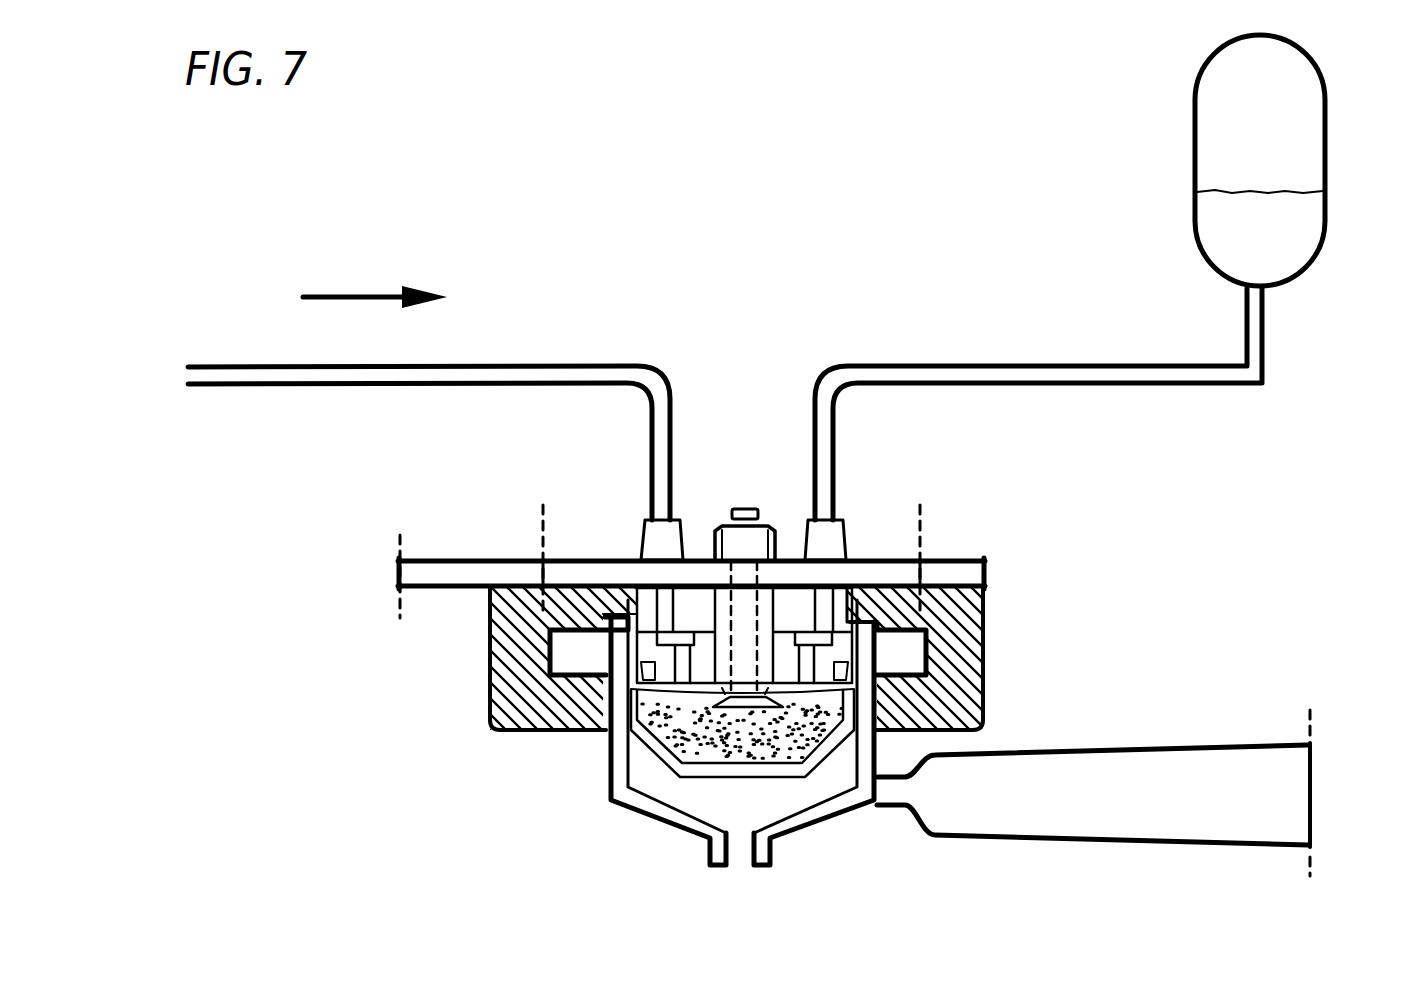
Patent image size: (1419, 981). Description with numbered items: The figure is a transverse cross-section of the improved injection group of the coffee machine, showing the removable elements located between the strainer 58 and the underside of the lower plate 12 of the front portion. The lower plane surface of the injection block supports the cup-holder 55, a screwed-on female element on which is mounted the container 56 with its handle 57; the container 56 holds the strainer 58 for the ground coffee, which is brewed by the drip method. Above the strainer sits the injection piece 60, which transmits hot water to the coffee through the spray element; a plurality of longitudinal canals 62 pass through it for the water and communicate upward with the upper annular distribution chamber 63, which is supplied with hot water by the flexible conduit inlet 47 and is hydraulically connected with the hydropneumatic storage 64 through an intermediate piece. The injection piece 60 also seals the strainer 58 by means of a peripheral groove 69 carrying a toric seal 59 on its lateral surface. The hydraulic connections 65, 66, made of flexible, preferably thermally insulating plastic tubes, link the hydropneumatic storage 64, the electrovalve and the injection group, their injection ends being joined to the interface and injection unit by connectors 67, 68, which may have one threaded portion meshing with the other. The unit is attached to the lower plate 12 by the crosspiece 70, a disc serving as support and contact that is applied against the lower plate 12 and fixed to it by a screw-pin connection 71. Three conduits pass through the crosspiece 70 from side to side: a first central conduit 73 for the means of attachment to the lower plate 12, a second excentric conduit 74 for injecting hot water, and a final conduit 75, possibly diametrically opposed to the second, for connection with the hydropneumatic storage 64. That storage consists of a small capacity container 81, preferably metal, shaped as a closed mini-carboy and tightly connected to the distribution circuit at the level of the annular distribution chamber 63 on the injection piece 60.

The lower plate 12 is at (983, 587).
The flexible conduit inlet 47 is at (608, 322).
The cup-holder 55 is at (771, 684).
The container 56 is at (712, 748).
The handle 57 is at (1112, 763).
The strainer 58 is at (811, 780).
The toric gasket 59 is at (840, 662).
The injection piece 60 is at (702, 672).
The longitudinal canals 62 is at (640, 648).
The upper annular distribution chamber 63 is at (768, 506).
The hydropneumatic storage 64 is at (1251, 160).
The hydraulic connection 65 is at (1015, 367).
The hydraulic connection 66 is at (472, 367).
The connector 67 is at (652, 535).
The connector 68 is at (825, 535).
The peripheral groove 69 is at (577, 728).
The crosspiece 70 is at (697, 602).
The screw-pin connection 71 is at (745, 500).
The first central conduit 73 is at (748, 615).
The second excentric conduit 74 is at (655, 600).
The final conduit 75 is at (825, 635).
The small capacity container 81 is at (1210, 108).